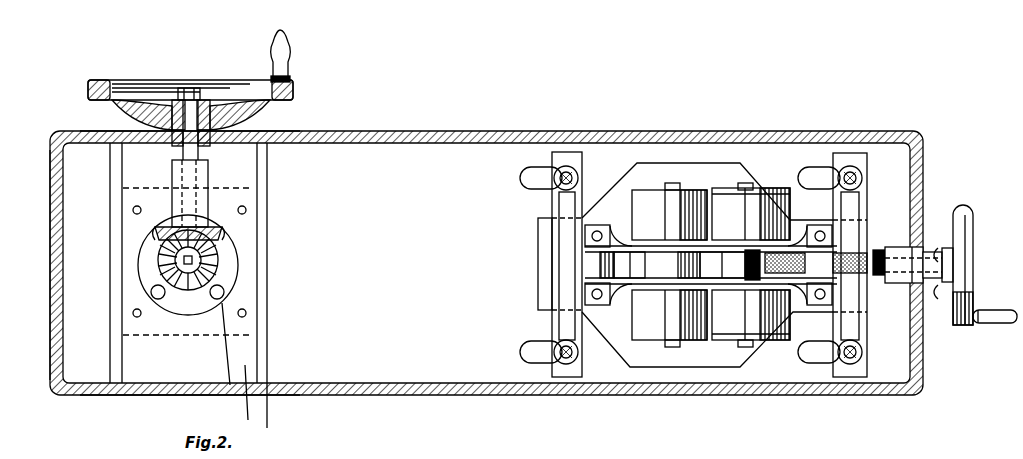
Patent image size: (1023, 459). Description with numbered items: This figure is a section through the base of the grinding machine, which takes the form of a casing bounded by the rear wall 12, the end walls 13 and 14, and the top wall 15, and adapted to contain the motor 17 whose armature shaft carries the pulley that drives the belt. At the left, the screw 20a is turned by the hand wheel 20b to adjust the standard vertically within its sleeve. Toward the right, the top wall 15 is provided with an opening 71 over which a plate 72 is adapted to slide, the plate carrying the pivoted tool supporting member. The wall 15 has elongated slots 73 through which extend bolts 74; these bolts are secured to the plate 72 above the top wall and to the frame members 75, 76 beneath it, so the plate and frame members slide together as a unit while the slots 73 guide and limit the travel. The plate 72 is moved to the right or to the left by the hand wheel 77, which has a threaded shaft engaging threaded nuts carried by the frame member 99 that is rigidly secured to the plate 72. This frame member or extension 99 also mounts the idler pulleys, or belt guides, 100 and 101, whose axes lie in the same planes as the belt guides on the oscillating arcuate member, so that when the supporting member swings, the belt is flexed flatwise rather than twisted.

The rear wall 12 is at (402, 395).
The end wall 13 is at (923, 364).
The end wall 14 is at (50, 337).
The top wall 15 is at (350, 372).
The motor 17 is at (444, 132).
The screw 20a is at (200, 260).
The hand wheel 20b is at (290, 89).
The opening 71 is at (684, 168).
The plate 72 is at (645, 367).
The elongated slots 73 is at (530, 175).
The bolts 74 is at (862, 176).
The frame member 75 is at (862, 333).
The frame member 76 is at (552, 324).
The hand wheel 77 is at (974, 255).
The frame member 99 is at (838, 238).
The idler pulley 100 is at (767, 190).
The idler pulley 101 is at (647, 195).